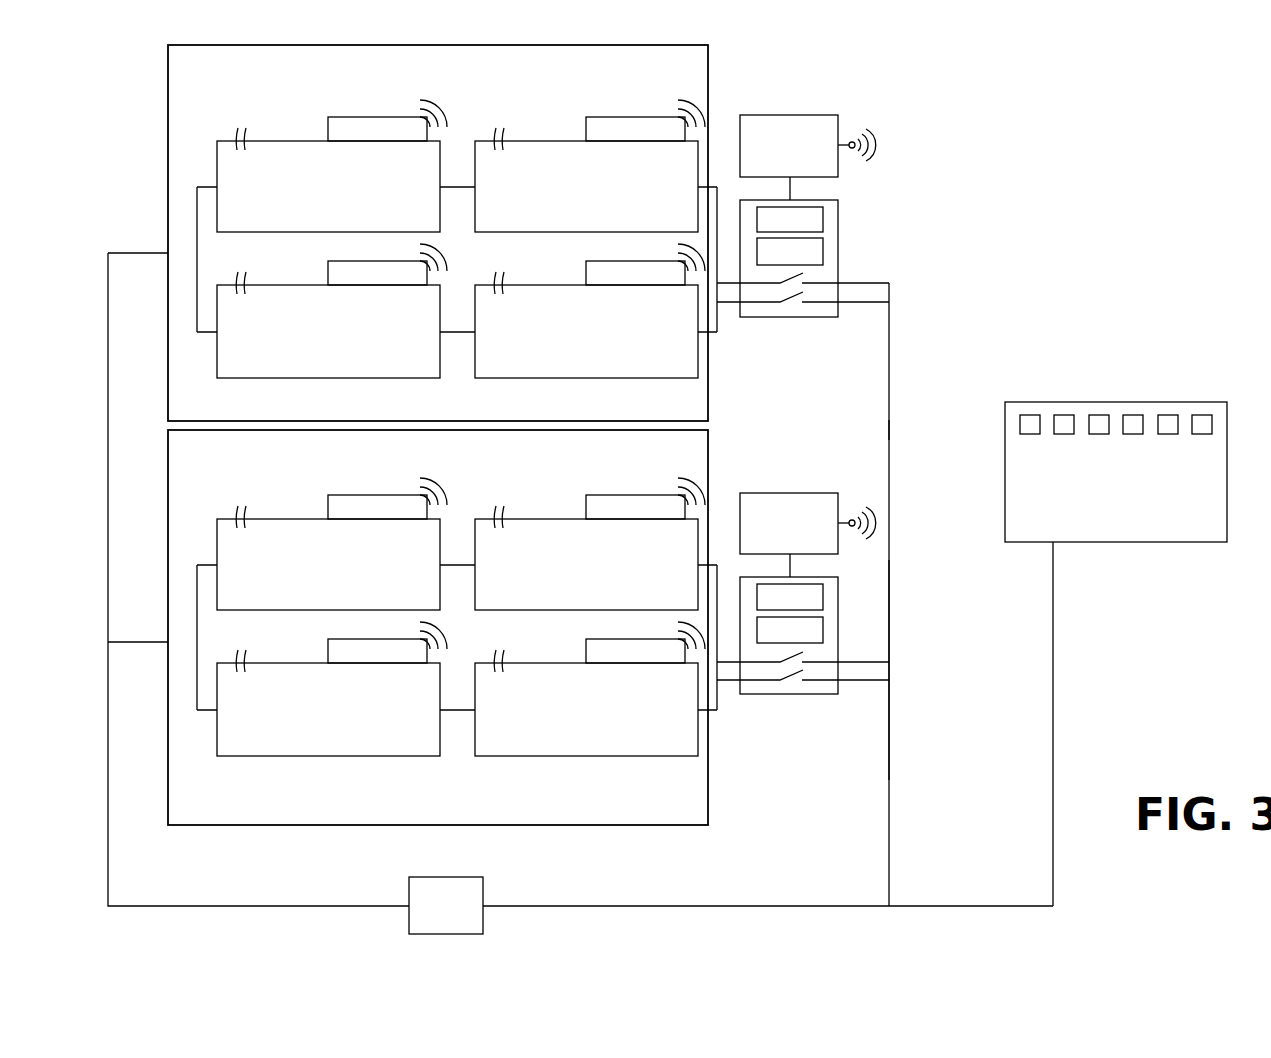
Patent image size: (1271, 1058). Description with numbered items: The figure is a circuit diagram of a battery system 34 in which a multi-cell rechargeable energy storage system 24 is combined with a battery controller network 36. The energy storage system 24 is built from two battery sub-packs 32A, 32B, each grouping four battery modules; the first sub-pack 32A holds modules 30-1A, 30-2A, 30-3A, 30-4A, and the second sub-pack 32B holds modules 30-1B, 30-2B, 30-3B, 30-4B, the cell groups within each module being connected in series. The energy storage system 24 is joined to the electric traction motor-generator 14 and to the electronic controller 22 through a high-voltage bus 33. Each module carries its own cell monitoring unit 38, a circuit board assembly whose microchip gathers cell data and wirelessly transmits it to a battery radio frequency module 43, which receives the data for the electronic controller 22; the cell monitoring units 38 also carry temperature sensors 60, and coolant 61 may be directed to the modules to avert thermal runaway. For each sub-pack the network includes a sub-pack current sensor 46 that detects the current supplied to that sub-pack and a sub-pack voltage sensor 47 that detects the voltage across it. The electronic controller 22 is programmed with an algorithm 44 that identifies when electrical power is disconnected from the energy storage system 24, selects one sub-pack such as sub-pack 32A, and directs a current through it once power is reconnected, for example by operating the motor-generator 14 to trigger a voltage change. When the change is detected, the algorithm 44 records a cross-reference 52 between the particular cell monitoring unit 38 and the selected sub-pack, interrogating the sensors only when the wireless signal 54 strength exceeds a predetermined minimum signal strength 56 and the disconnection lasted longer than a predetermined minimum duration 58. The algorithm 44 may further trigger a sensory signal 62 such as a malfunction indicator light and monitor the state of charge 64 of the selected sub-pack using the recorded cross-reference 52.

The power-source 14 is at (446, 905).
The electronic controller 22 is at (1116, 628).
The rechargeable energy storage system 24 is at (323, 828).
The battery module 30-1A is at (518, 136).
The battery module 30-2A is at (277, 136).
The battery module 30-3A is at (329, 382).
The battery module 30-4A is at (582, 382).
The battery module 30-1B is at (518, 514).
The battery module 30-2B is at (277, 514).
The battery module 30-3B is at (348, 760).
The battery module 30-4B is at (582, 760).
The battery sub-pack 32A is at (479, 76).
The battery sub-pack 32B is at (507, 812).
The high-voltage bus 33 is at (890, 768).
The battery system 34 is at (962, 316).
The battery controller network 36 is at (864, 418).
The cell monitoring unit 38 is at (373, 117).
The battery radio frequency module 43 is at (789, 334).
The algorithm 44 is at (1031, 415).
The sub-pack current sensor 46 is at (823, 222).
The sub-pack voltage sensor 47 is at (823, 255).
The cross-reference 52 is at (1065, 415).
The wireless signal 54 is at (870, 140).
The predetermined minimum signal strength 56 is at (1100, 415).
The predetermined minimum duration 58 is at (1134, 415).
The temperature sensor 60 is at (486, 462).
The coolant 61 is at (237, 126).
The sensory signal 62 is at (1169, 415).
The state of charge 64 is at (1203, 415).